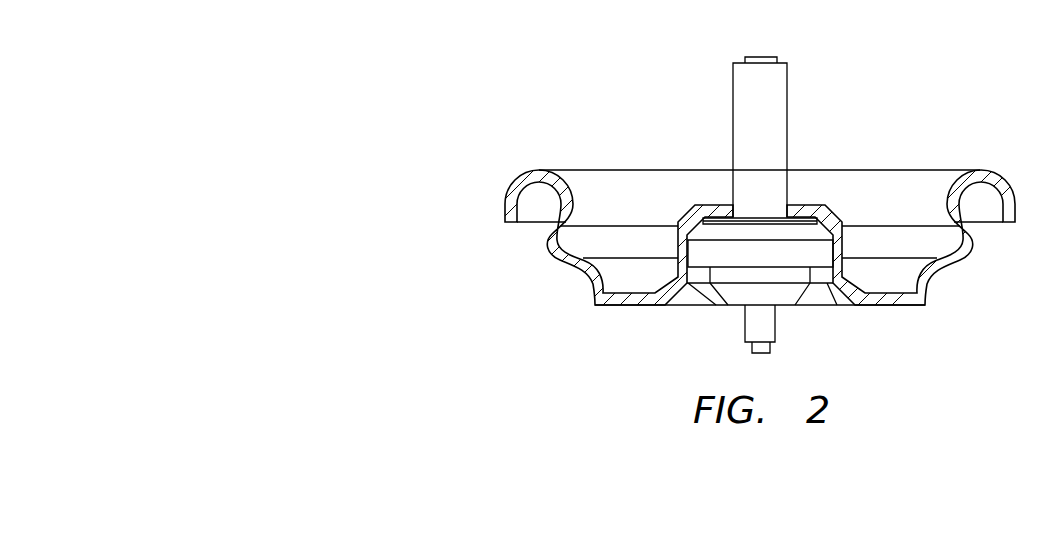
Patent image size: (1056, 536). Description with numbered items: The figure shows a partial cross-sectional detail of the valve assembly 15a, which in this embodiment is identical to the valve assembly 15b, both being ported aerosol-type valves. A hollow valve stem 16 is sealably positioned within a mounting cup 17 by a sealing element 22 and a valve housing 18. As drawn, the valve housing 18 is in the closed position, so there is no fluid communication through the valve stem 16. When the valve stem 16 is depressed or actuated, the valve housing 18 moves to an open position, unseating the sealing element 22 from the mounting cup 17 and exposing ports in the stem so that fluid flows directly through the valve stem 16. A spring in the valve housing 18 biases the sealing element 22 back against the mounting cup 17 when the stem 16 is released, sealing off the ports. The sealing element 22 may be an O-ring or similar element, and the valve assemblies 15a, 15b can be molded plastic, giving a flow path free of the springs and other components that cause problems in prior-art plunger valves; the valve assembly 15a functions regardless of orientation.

The valve assembly 15a is at (696, 198).
The valve assembly 15b is at (574, 110).
The hollow valve stem 16 is at (767, 110).
The mounting cup 17 is at (890, 198).
The valve housing 18 is at (748, 260).
The sealing element 22 is at (792, 223).